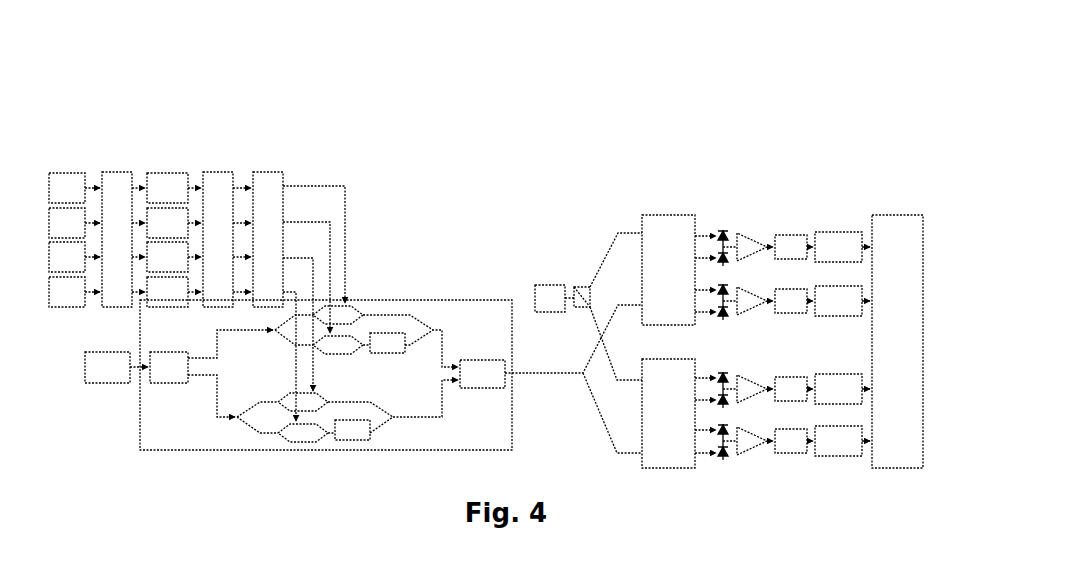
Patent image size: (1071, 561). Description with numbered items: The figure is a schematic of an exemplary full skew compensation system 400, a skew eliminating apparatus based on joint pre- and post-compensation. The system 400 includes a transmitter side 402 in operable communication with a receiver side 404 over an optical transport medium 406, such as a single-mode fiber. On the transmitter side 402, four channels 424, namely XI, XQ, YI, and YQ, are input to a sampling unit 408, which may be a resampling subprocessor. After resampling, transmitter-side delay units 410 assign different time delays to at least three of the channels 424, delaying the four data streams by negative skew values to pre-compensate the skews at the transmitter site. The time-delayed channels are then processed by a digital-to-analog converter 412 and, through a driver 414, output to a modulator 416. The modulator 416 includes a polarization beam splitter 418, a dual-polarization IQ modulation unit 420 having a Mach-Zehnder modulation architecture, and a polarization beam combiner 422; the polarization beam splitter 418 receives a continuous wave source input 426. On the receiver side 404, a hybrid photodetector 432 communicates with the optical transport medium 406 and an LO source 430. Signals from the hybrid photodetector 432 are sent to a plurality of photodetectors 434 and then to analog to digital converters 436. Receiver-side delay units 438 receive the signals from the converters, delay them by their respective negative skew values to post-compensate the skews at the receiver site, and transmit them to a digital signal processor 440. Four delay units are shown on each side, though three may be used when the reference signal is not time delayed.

The full skew compensation system 400 is at (745, 67).
The transmitter side 402 is at (523, 137).
The receiver side 404 is at (628, 156).
The optical transport medium 406 is at (568, 376).
The sampling unit 408 is at (116, 167).
The transmitter-side delay units 410 is at (173, 167).
The digital-to-analog converter 412 is at (223, 167).
The driver 414 is at (270, 167).
The modulator 416 is at (345, 453).
The polarization beam splitter 418 is at (166, 385).
The dual-polarization IQ modulation unit 420 is at (436, 329).
The polarization beam combiner 422 is at (497, 390).
The four channels 424 is at (47, 313).
The continuous wave source input 426 is at (108, 385).
The LO source 430 is at (556, 283).
The hybrid photodetector 432 is at (659, 216).
The photodetectors 434 is at (750, 234).
The analog to digital converters 436 is at (793, 236).
The receiver-side delay units 438 is at (837, 229).
The digital signal processor 440 is at (907, 215).